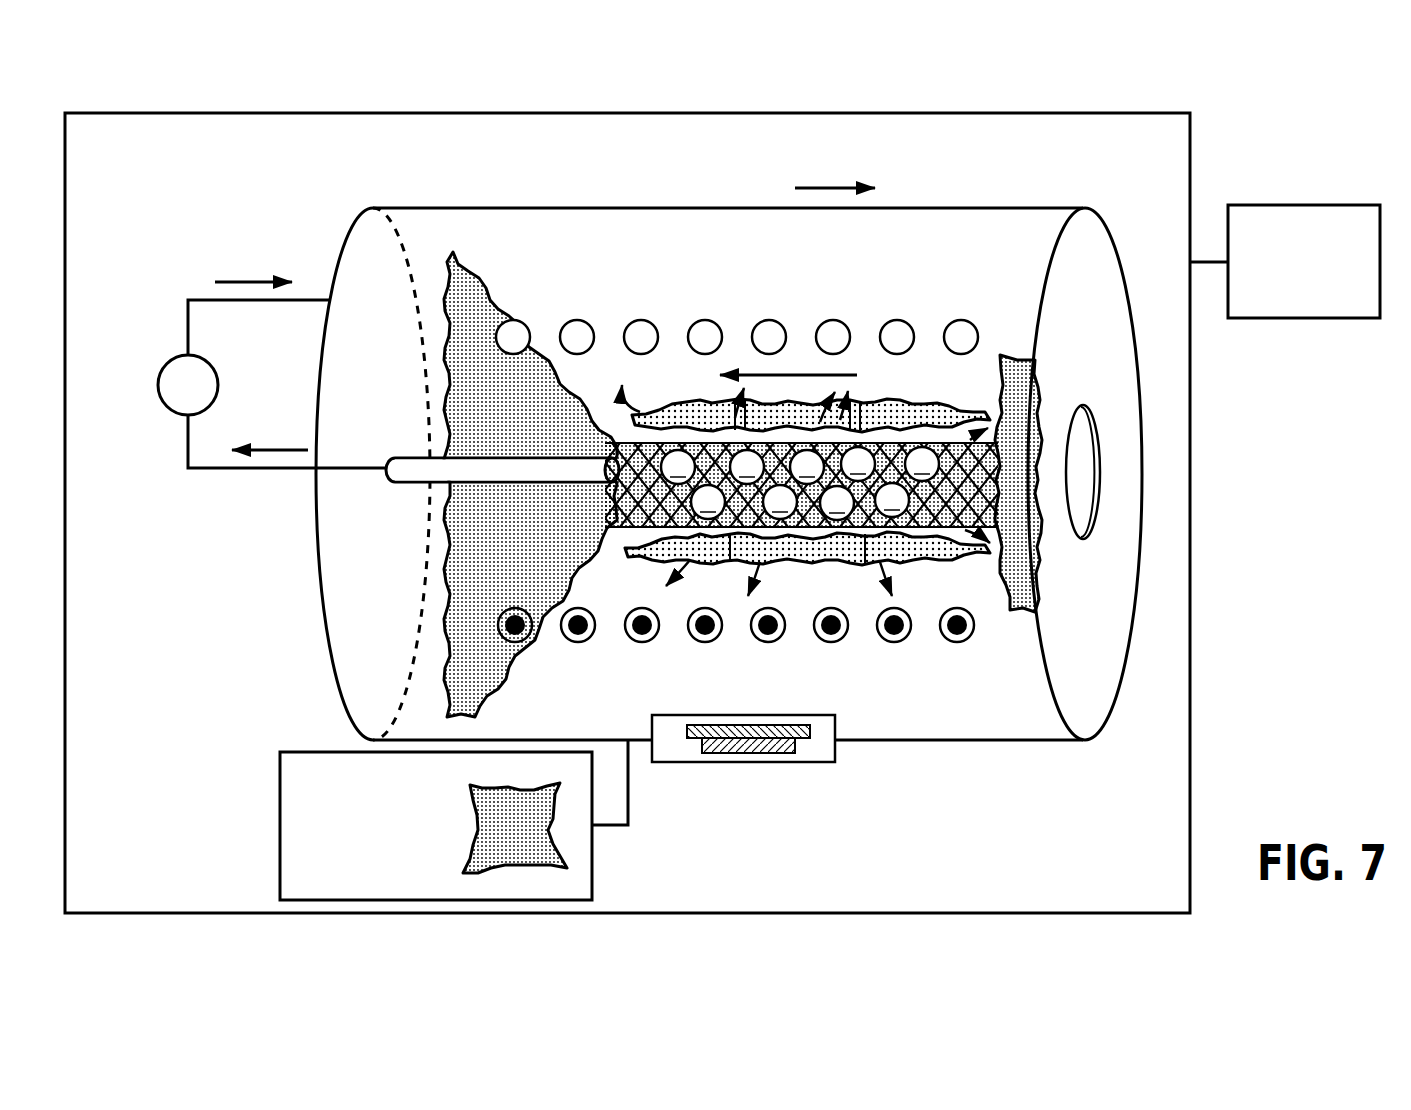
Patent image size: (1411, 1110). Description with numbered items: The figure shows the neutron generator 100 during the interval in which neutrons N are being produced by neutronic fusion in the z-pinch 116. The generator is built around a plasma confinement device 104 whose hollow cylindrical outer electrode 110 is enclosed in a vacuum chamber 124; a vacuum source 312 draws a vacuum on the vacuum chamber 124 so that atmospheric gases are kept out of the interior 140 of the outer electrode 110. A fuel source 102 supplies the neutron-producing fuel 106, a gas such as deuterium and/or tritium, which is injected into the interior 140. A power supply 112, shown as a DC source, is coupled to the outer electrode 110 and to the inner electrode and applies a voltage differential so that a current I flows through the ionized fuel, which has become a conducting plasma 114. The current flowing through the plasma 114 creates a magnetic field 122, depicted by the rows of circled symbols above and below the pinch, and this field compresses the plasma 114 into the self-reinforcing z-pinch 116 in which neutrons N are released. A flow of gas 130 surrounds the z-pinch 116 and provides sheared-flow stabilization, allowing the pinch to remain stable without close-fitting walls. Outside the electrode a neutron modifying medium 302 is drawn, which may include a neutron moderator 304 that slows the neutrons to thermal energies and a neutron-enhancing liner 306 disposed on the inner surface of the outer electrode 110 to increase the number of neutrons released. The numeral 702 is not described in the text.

The neutron generator 100 is at (145, 43).
The fuel source 102 is at (426, 855).
The plasma confinement device 104 is at (352, 205).
The neutron-producing fuel 106 is at (495, 842).
The outer electrode 110 is at (1007, 208).
The power supply 112 is at (167, 362).
The plasma 114 is at (482, 287).
The z-pinch 116 is at (628, 563).
The magnetic field 122 is at (772, 321).
The vacuum chamber 124 is at (608, 174).
The gas 130 is at (907, 413).
The interior of the outer electrode 140 is at (472, 244).
The neutron modifying medium 302 is at (845, 751).
The neutron moderator 304 is at (789, 758).
The liner 306 is at (683, 737).
The vacuum source 312 is at (1283, 304).
The magnetic field coils out of page 702 is at (983, 572).